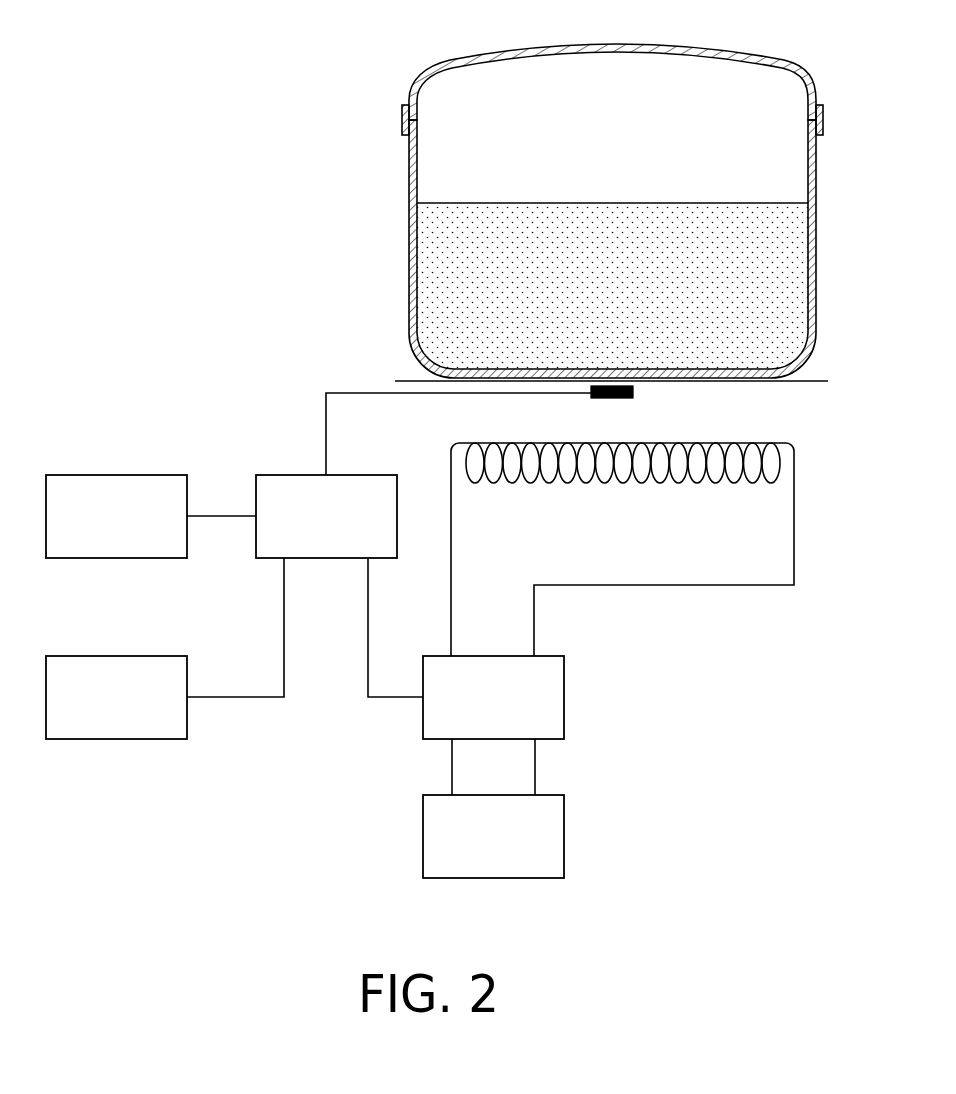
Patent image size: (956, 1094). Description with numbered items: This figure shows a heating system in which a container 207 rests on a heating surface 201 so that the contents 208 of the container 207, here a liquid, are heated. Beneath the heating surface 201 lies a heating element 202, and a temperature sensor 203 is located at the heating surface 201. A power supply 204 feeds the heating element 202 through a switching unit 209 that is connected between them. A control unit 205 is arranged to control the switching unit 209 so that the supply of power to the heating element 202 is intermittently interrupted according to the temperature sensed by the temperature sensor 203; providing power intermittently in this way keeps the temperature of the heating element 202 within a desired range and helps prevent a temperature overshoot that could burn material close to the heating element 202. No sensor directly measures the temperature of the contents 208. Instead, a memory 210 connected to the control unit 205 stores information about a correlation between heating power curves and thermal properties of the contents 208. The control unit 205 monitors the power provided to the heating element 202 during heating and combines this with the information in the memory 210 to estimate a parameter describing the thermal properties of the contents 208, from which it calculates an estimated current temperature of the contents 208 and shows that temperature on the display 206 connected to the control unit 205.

The heating surface 201 is at (400, 380).
The heating element 202 is at (609, 495).
The temperature sensor 203 is at (617, 385).
The power supply 204 is at (564, 837).
The control unit 205 is at (323, 558).
The display 206 is at (110, 558).
The container 207 is at (403, 68).
The contents 208 is at (640, 203).
The switching unit 209 is at (564, 698).
The memory 210 is at (110, 739).